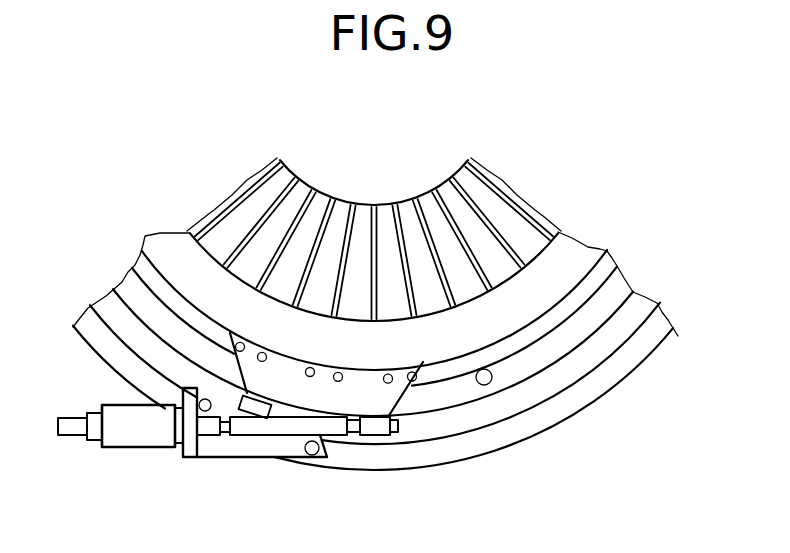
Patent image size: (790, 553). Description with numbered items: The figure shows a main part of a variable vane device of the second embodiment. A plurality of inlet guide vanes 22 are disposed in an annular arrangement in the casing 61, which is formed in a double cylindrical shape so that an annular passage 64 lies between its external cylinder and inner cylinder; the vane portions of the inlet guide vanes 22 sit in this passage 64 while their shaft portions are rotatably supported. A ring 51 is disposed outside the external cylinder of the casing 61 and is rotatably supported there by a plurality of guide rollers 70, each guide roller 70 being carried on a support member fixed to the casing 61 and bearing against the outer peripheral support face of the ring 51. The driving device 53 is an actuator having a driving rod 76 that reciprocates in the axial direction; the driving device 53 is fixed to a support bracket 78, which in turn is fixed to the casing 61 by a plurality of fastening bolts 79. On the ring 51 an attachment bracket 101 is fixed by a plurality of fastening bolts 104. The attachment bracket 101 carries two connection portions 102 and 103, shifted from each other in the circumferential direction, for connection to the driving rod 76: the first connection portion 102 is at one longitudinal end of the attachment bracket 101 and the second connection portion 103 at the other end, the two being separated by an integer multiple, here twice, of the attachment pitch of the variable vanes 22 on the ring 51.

The inlet guide vane 22 is at (335, 214).
The annular passage 64 is at (410, 232).
The fastening bolt 104 is at (311, 366).
The ring 51 is at (618, 316).
The casing 61 is at (636, 372).
The attachment bracket 101 is at (414, 392).
The guide roller 70 is at (485, 386).
The driving device 53 is at (132, 450).
The support bracket 78 is at (285, 458).
The fastening bolt 79 is at (197, 398).
The second connection portion 103 is at (250, 416).
The driving rod 76 is at (306, 477).
The first connection portion 102 is at (378, 438).